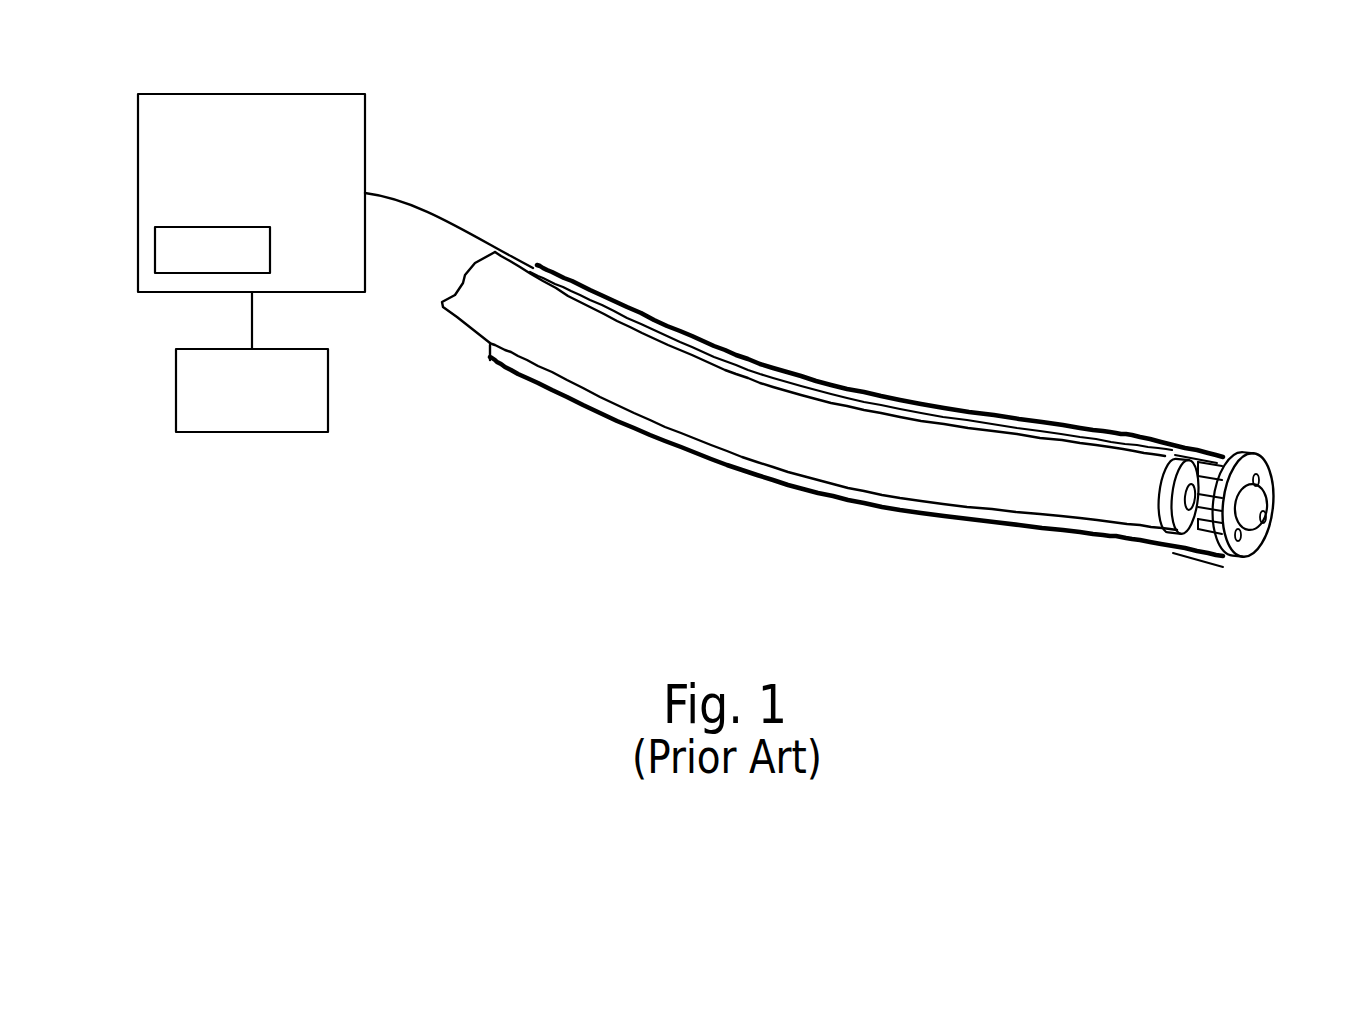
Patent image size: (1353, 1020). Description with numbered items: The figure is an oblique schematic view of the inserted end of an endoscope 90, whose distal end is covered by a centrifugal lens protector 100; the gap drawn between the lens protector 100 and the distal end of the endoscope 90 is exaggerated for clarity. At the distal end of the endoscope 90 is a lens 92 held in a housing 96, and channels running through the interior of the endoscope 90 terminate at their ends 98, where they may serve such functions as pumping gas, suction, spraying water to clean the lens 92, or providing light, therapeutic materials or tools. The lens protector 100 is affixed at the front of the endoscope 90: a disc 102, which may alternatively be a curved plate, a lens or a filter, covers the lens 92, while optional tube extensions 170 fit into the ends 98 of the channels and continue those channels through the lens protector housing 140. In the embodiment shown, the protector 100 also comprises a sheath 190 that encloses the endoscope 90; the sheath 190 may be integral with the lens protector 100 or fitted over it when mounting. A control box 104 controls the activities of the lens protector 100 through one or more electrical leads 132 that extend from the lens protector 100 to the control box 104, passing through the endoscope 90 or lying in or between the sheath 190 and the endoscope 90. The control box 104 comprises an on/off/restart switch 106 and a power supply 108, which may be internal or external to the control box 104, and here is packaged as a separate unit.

The endoscope 90 is at (840, 455).
The lens 92 is at (1186, 486).
The housing 96 is at (1168, 488).
The ends of the channels 98 is at (1211, 442).
The centrifugal lens protector 100 is at (1242, 565).
The disc 102 is at (1258, 500).
The control box 104 is at (138, 193).
The on/off/restart switch 106 is at (155, 253).
The power supply 108 is at (176, 392).
The leads 132 is at (463, 220).
The lens protector housing 140 is at (1240, 446).
The tube extensions 170 is at (1232, 447).
The sheath 190 is at (934, 412).